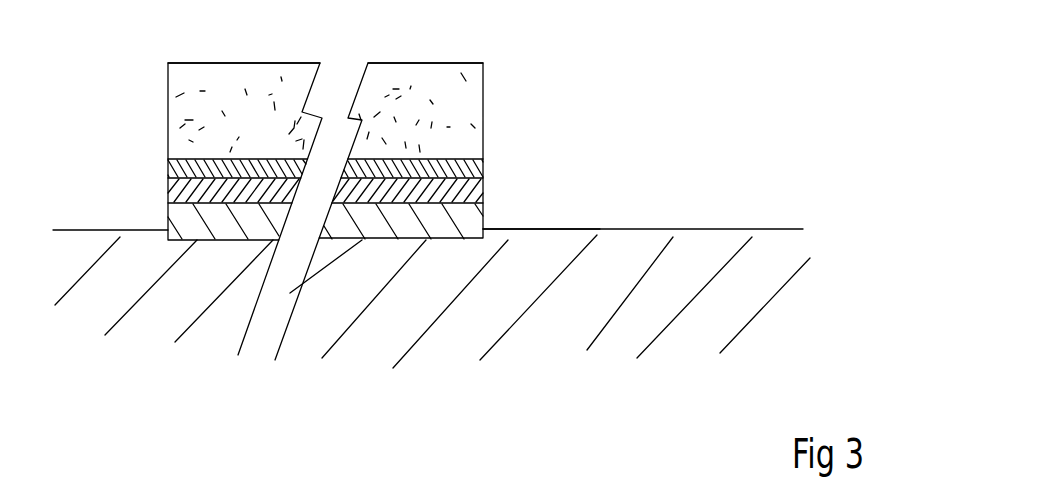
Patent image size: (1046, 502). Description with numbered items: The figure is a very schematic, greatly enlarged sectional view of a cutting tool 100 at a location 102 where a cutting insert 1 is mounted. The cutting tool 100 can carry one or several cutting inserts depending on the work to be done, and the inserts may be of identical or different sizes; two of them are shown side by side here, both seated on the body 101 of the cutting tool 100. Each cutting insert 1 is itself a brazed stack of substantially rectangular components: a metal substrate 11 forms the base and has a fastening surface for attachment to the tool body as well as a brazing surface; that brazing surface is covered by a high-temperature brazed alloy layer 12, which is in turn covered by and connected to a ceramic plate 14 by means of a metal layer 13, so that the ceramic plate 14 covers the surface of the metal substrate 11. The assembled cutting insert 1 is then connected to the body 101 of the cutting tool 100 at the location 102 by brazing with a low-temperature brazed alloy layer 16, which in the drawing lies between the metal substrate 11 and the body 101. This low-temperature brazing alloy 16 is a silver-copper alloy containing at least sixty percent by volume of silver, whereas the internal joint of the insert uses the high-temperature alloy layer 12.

The cutting insert 1 is at (626, 2).
The metal substrate 11 is at (490, 192).
The high-temperature brazed alloy layer 12 is at (492, 167).
The metal layer 13 is at (488, 150).
The ceramic plate 14 is at (484, 63).
The low-temperature brazed alloy layer 16 is at (486, 217).
The cutting tool 100 is at (732, 205).
The body 101 is at (600, 368).
The location 102 is at (475, 242).